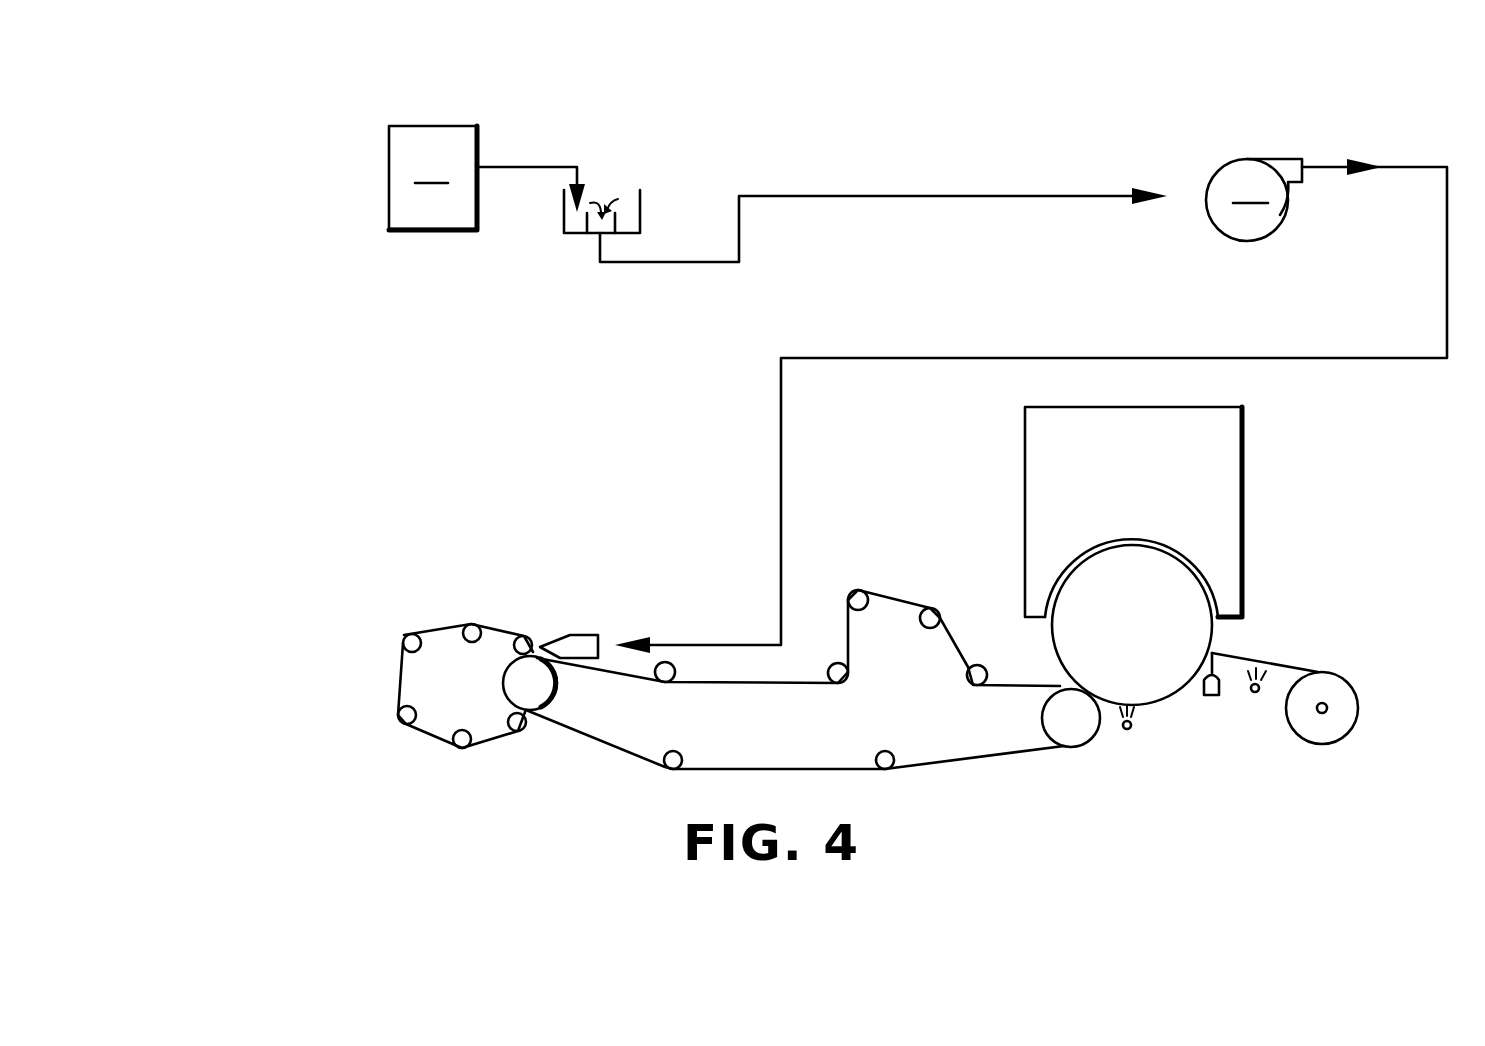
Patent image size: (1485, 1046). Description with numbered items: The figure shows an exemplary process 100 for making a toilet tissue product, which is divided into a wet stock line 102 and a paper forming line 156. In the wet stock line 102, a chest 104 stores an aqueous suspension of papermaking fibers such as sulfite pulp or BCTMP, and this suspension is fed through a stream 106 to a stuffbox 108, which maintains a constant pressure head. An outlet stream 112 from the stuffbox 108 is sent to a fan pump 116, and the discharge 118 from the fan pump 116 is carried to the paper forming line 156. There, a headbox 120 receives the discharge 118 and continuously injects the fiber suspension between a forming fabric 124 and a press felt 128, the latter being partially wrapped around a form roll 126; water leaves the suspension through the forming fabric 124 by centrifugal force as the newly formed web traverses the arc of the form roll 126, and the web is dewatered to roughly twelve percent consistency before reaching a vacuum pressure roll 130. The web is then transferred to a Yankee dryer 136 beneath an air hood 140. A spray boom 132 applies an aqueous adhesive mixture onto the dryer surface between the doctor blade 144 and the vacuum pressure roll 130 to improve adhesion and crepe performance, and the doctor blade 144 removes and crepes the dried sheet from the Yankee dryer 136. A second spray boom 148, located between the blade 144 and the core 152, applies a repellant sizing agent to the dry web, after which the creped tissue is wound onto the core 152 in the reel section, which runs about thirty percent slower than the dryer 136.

The imaging system 100 is at (272, 70).
The wet stock line 102 is at (290, 154).
The chest 104 is at (418, 230).
The stream 106 is at (528, 167).
The stuffbox 108 is at (564, 212).
The outlet stream 112 is at (656, 262).
The fan pump 116 is at (1257, 241).
The discharge 118 is at (1322, 170).
The headbox 120 is at (583, 635).
The forming fabric 124 is at (514, 637).
The form roll 126 is at (558, 690).
The press felt 128 is at (583, 738).
The vacuum pressure roll 130 is at (1042, 720).
The spray boom 132 is at (1125, 730).
The Yankee dryer 136 is at (1152, 634).
The air hood 140 is at (1150, 486).
The doctor blade 144 is at (1212, 695).
The spray boom 148 is at (1253, 693).
The core 152 is at (1327, 706).
The paper forming line 156 is at (345, 678).